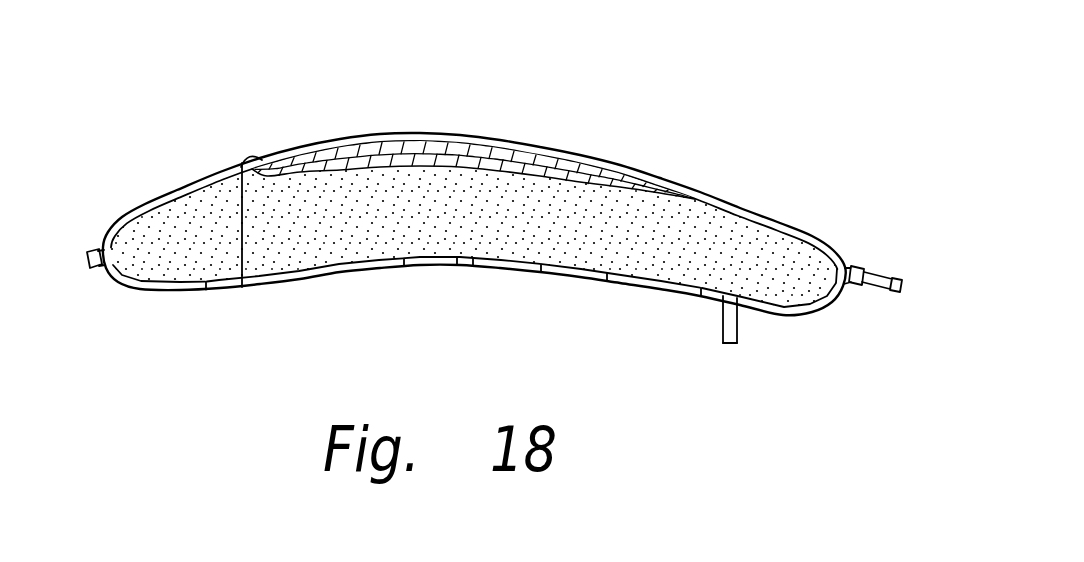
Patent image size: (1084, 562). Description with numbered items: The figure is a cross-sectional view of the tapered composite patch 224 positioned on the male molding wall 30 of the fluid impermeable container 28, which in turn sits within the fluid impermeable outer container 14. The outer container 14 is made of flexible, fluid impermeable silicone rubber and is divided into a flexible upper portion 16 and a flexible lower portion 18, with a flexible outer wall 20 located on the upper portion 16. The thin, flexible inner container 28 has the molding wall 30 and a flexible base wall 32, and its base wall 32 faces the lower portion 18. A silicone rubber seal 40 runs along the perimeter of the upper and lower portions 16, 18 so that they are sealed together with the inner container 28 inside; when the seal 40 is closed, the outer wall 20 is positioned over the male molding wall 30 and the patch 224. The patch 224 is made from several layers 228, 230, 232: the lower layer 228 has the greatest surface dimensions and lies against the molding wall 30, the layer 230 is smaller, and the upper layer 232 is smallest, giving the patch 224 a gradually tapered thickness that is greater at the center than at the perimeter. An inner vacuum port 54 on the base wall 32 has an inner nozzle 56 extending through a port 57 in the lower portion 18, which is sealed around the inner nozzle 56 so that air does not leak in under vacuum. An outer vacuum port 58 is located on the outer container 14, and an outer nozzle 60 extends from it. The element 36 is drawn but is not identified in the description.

The flexible outer container 14 is at (367, 133).
The flexible upper portion 16 is at (177, 190).
The flexible lower portion 18 is at (207, 290).
The flexible outer wall 20 is at (263, 168).
The inner container 28 is at (387, 230).
The flexible molding wall 30 is at (242, 287).
The flexible base wall 32 is at (457, 264).
The plate segment 36 is at (643, 260).
The silicone rubber seal 40 is at (93, 265).
The inner vacuum port 54 is at (740, 307).
The inner nozzle 56 is at (737, 343).
The port 57 is at (723, 313).
The outer vacuum port 58 is at (870, 273).
The outer nozzle 60 is at (883, 287).
The composite patch 224 is at (480, 137).
The lower layer 228 is at (677, 193).
The intermediate layer 230 is at (637, 173).
The upper layer 232 is at (585, 158).